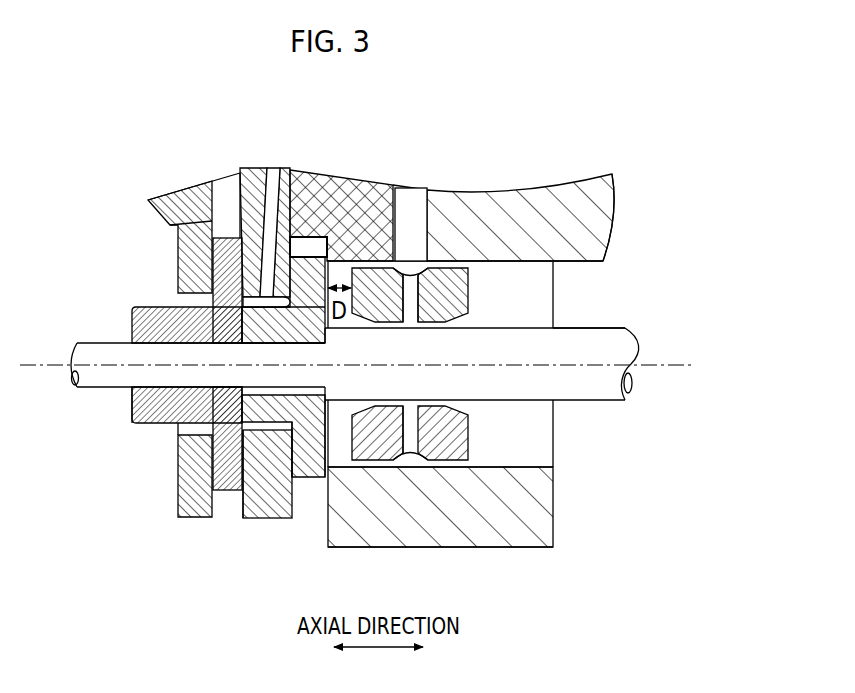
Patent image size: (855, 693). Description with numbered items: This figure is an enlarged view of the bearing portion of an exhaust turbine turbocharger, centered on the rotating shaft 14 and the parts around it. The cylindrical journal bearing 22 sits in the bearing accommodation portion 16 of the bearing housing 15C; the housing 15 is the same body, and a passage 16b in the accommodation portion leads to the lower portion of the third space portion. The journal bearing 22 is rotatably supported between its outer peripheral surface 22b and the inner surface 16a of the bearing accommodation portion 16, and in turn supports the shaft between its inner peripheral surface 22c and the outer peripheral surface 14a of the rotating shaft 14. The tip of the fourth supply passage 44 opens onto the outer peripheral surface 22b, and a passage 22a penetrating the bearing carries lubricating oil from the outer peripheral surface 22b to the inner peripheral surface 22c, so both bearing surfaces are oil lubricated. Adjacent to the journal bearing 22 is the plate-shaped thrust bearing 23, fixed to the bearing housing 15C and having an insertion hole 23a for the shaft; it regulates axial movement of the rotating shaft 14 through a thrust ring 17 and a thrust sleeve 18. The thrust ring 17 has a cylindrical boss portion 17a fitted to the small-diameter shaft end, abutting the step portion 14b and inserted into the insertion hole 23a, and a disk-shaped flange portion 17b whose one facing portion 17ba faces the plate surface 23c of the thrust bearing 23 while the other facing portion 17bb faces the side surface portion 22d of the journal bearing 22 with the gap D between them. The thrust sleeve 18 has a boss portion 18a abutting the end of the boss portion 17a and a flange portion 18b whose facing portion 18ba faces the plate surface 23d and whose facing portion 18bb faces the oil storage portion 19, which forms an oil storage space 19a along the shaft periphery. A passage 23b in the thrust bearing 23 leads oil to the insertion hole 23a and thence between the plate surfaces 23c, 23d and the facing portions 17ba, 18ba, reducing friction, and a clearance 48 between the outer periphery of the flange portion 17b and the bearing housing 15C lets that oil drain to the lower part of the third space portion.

The rotating shaft 14 is at (622, 325).
The outer peripheral surface of the rotating shaft 14a is at (593, 328).
The step portion 14b is at (323, 392).
The bearing housing 15 is at (492, 207).
The bearing housing 15C is at (592, 190).
The bearing accommodation portion 16 is at (542, 500).
The inner surface of the bearing accommodation portion 16a is at (533, 466).
The passage 16b is at (553, 541).
The thrust ring 17 is at (265, 410).
The boss portion of the thrust ring 17a is at (250, 437).
The flange portion of the thrust ring 17b is at (307, 478).
The facing portion 17ba is at (310, 240).
The facing portion 17bb is at (327, 435).
The thrust sleeve 18 is at (162, 424).
The boss portion of the thrust sleeve 18a is at (145, 424).
The flange portion of the thrust sleeve 18b is at (229, 491).
The facing portion 18ba is at (228, 265).
The facing portion 18bb is at (213, 283).
The oil storage portion 19 is at (178, 246).
The oil storage space 19a is at (195, 188).
The journal bearing 22 is at (458, 298).
The passage 22a is at (410, 320).
The outer peripheral surface of the journal bearing 22b is at (453, 266).
The inner peripheral surface of the journal bearing 22c is at (437, 315).
The side surface portion of the journal bearing 22d is at (347, 440).
The thrust bearing 23 is at (257, 177).
The insertion hole 23a is at (282, 311).
The passage 23b is at (277, 177).
The plate surface 23c is at (283, 305).
The plate surface 23d is at (255, 232).
The fourth supply passage 44 is at (413, 203).
The clearance 48 is at (306, 256).